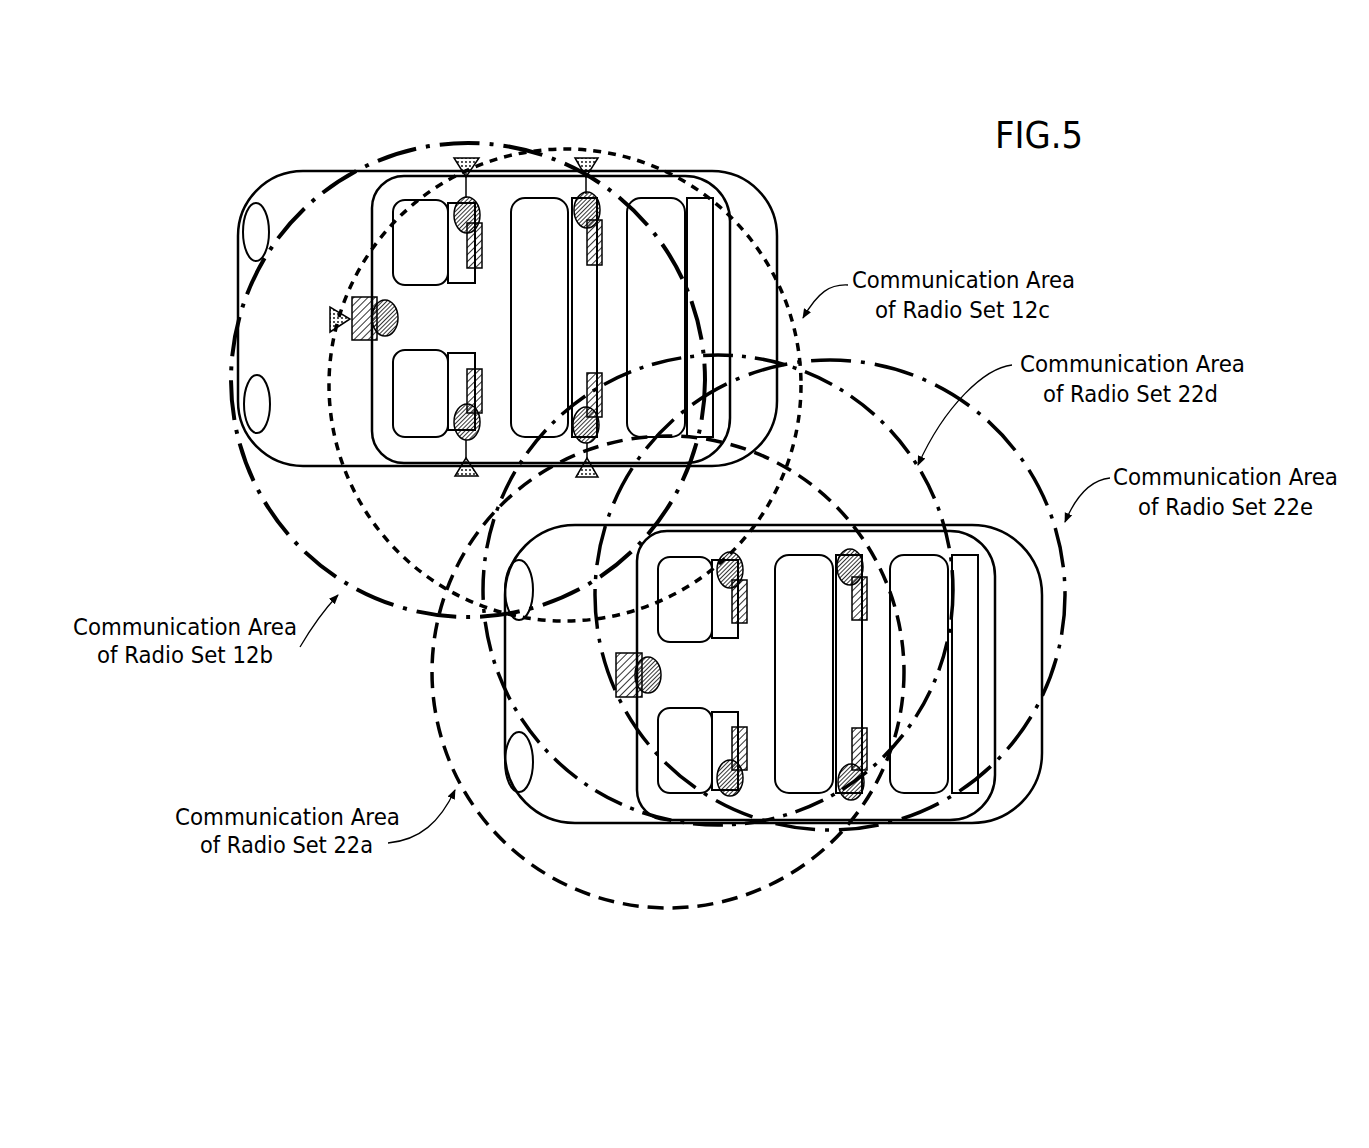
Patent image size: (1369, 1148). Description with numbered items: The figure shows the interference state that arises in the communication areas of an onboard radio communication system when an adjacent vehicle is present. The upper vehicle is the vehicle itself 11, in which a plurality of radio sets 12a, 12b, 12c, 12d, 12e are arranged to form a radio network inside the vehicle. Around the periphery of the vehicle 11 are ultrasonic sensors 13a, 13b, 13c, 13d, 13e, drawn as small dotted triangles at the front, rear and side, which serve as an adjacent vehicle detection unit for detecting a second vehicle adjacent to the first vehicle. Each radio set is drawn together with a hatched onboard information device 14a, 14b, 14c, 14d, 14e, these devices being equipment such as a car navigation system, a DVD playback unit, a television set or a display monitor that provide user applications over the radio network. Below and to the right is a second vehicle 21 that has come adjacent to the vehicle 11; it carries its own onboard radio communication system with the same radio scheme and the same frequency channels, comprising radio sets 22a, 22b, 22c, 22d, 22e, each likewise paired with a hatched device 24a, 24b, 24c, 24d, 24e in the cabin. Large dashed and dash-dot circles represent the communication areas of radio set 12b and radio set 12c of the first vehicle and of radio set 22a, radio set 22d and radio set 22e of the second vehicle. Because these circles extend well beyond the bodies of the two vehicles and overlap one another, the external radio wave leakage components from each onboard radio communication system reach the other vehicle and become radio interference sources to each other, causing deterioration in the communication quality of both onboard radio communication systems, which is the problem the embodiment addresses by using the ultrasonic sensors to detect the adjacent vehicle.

The vehicle 11 is at (238, 262).
The second vehicle 21 is at (1025, 802).
The radio set 12a is at (399, 320).
The radio set 12b is at (462, 438).
The radio set 12c is at (600, 427).
The radio set 12d is at (478, 204).
The radio set 12e is at (582, 224).
The ultrasonic sensor 13a is at (329, 320).
The ultrasonic sensor 13b is at (466, 477).
The ultrasonic sensor 13c is at (586, 478).
The ultrasonic sensor 13d is at (466, 157).
The ultrasonic sensor 13e is at (586, 157).
The onboard information device 14a is at (356, 297).
The onboard information device 14b is at (466, 392).
The onboard information device 14c is at (586, 387).
The onboard information device 14d is at (483, 266).
The onboard information device 14e is at (587, 260).
The radio set 22a is at (662, 672).
The radio set 22b is at (718, 775).
The radio set 22c is at (839, 770).
The radio set 22d is at (746, 562).
The radio set 22e is at (844, 583).
The display unit 24a is at (616, 670).
The display unit 24b is at (747, 730).
The display unit 24c is at (852, 734).
The display unit 24d is at (747, 624).
The display unit 24e is at (852, 622).